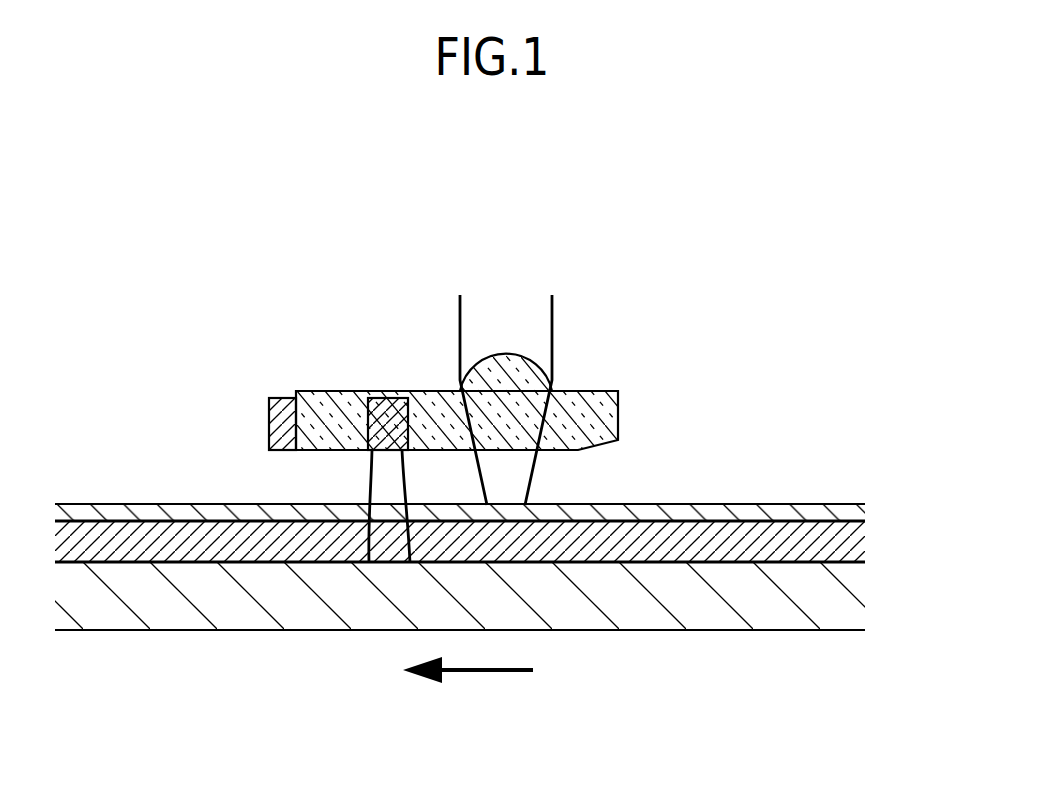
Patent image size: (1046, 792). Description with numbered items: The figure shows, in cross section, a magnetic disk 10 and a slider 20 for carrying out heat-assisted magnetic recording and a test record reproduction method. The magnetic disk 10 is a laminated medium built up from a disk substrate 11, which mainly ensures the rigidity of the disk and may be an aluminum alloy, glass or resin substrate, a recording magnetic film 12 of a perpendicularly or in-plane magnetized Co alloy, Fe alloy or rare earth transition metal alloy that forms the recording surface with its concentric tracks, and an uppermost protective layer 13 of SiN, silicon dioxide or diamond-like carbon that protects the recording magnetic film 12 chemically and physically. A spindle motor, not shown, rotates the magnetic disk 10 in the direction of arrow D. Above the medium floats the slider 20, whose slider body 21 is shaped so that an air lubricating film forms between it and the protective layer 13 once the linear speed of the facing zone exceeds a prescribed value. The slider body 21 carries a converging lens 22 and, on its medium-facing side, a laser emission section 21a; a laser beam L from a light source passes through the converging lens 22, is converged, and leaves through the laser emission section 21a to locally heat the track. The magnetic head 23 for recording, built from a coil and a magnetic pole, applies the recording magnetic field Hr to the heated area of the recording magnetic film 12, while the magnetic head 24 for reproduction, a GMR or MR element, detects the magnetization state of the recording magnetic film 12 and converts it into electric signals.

The magnetic disk 10 is at (499, 525).
The disk substrate 11 is at (855, 597).
The recording magnetic film 12 is at (852, 547).
The protective layer 13 is at (858, 515).
The slider 20 is at (445, 372).
The slider body 21 is at (476, 412).
The laser emission section 21a is at (503, 451).
The converging lens 22 is at (503, 363).
The magnetic head for recording 23 is at (385, 407).
The magnetic head for reproduction 24 is at (282, 405).
The recording magnetic field Hr is at (375, 485).
The laser beam L is at (534, 465).
The rotation direction arrow D is at (468, 688).